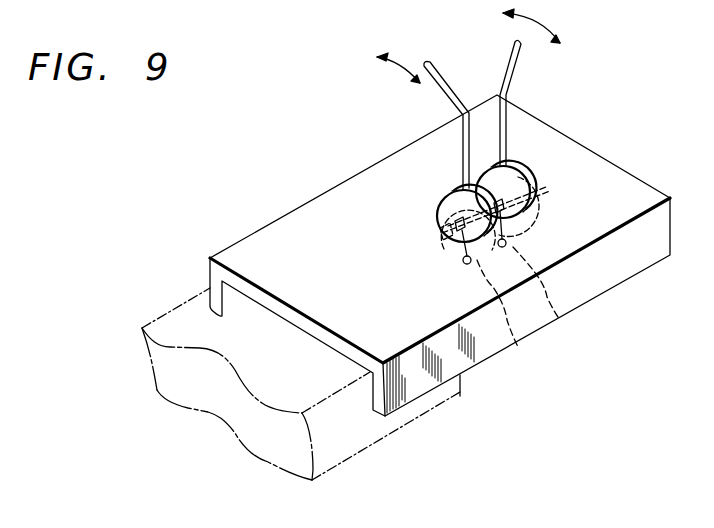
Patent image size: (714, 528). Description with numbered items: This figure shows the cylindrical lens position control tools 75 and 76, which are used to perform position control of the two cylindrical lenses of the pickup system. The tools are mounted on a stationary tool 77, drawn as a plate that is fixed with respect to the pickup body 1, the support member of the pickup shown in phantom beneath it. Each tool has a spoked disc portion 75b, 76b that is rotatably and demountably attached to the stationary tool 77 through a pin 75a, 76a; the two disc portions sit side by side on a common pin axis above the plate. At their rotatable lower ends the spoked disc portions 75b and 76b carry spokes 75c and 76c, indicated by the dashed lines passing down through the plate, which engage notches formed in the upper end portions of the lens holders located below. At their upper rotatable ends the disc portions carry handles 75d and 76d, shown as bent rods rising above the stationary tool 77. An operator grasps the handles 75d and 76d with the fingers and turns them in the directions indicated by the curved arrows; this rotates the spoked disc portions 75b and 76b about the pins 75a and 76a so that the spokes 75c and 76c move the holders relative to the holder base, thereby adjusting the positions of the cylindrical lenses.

The pickup body 1 is at (350, 453).
The cylindrical lens position control tool 75 is at (574, 174).
The pin 75a is at (513, 173).
The spoked disc portion 75b is at (512, 177).
The spokes 75c is at (557, 293).
The handle 75d is at (515, 73).
The cylindrical lens position control tool 76 is at (444, 212).
The pin 76a is at (440, 236).
The spoked disc portion 76b is at (450, 200).
The spokes 76c is at (510, 333).
The handle 76d is at (433, 80).
The stationary tool 77 is at (278, 226).